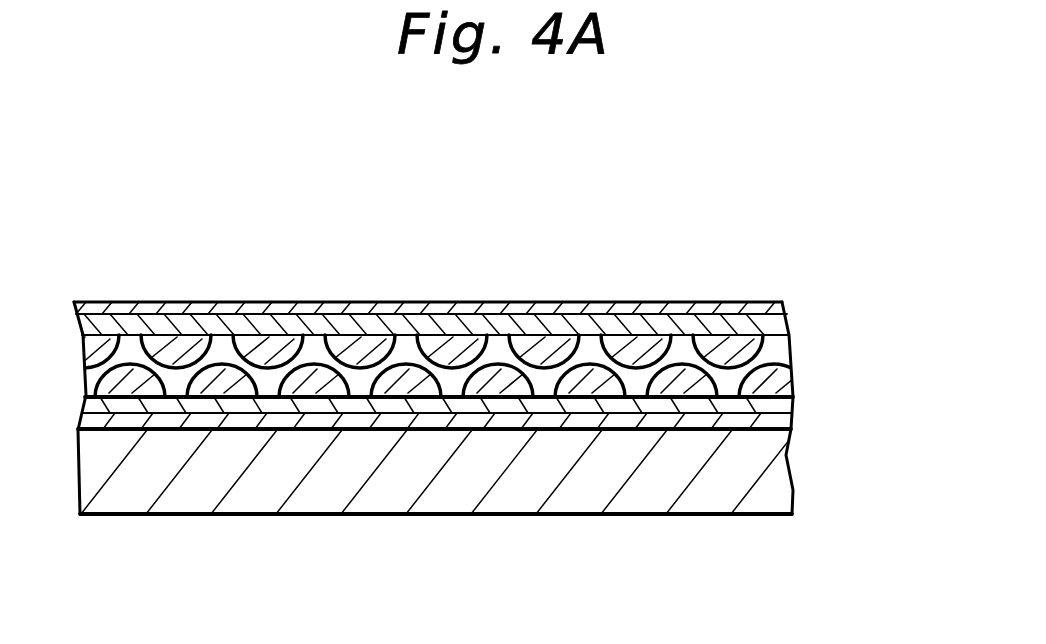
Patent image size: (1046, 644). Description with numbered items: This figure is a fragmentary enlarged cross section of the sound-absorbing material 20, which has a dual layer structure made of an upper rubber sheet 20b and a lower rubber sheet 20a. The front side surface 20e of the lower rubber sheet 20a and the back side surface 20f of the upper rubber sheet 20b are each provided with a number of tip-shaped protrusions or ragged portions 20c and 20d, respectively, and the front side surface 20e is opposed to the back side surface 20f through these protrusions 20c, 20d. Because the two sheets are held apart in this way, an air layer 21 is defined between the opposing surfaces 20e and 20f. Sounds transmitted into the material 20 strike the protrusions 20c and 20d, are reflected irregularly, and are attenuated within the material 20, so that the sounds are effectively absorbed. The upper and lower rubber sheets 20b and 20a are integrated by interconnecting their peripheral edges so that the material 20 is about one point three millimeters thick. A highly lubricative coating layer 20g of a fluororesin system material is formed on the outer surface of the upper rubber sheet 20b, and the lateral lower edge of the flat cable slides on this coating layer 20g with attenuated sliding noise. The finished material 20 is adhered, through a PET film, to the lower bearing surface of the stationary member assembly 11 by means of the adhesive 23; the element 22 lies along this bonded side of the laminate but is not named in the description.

The stationary member assembly 11 is at (200, 463).
The sound-absorbing material 20 is at (710, 137).
The lower rubber sheet 20a is at (792, 399).
The upper rubber sheet 20b is at (790, 326).
The protrusions 20c is at (753, 377).
The protrusions 20d is at (637, 343).
The front side surface 20e is at (451, 382).
The back side surface 20f is at (318, 333).
The highly lubricative coating layer 20g is at (118, 310).
The air layer 21 is at (267, 378).
The adhesive line 22 is at (789, 426).
The adhesive 23 is at (84, 398).